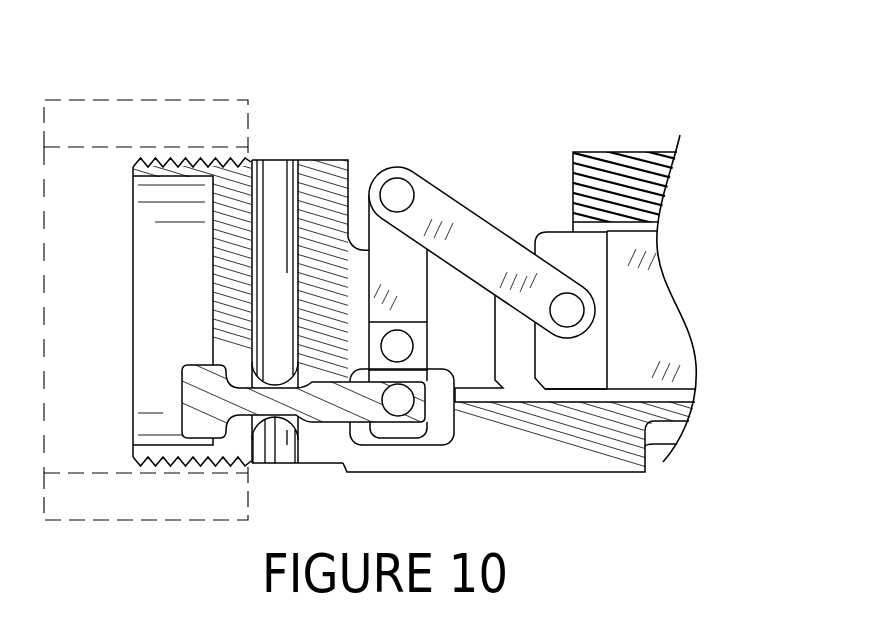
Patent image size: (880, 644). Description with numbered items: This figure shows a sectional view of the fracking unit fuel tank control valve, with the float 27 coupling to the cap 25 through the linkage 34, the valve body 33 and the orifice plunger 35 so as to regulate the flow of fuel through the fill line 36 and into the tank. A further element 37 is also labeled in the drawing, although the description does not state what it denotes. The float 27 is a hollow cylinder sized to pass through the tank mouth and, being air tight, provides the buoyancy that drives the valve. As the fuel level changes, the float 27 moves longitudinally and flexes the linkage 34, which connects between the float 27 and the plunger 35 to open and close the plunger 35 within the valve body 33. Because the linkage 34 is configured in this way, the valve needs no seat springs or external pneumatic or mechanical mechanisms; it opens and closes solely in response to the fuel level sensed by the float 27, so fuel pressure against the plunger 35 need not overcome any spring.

The cap 25 is at (187, 118).
The float 27 is at (663, 328).
The valve body 33 is at (561, 447).
The linkage 34 is at (486, 157).
The orifice plunger 35 is at (182, 367).
The fill line 36 is at (286, 168).
The nut 37 is at (222, 352).